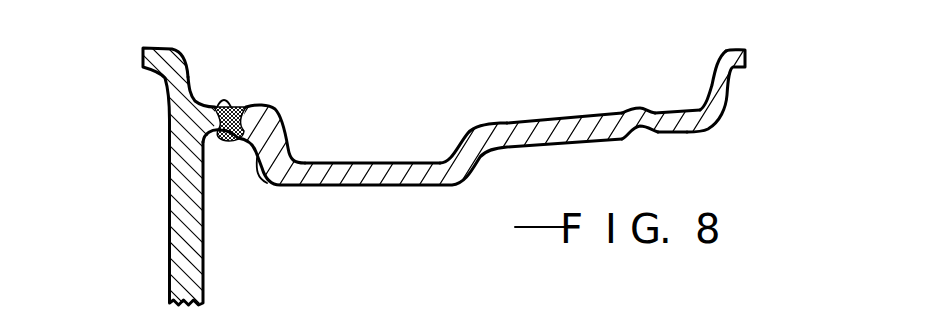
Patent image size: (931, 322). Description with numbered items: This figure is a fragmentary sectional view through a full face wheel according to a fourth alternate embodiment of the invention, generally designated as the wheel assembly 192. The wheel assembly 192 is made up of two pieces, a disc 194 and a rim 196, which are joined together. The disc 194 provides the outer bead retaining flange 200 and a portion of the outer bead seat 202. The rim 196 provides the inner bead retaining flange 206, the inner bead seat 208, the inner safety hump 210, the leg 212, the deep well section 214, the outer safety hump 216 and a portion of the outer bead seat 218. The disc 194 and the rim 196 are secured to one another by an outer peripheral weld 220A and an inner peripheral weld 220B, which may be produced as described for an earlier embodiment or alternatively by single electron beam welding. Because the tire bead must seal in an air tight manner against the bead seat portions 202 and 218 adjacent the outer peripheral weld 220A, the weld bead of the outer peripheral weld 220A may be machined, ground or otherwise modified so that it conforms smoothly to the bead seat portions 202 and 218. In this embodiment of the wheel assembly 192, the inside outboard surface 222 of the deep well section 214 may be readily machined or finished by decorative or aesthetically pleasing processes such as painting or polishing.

The fourth alternate embodiment 192 is at (553, 72).
The disc 194 is at (159, 199).
The rim 196 is at (678, 147).
The outer bead retaining flange 200 is at (169, 56).
The outer bead seat 202 is at (201, 104).
The inner bead retaining flange 206 is at (742, 49).
The inner bead seat 208 is at (673, 108).
The inner safety hump 210 is at (631, 108).
The leg 212 is at (521, 120).
The deep well section 214 is at (438, 153).
The outer safety hump 216 is at (272, 108).
The outer bead seat 218 is at (243, 103).
The outer peripheral weld 220A is at (214, 110).
The inner peripheral weld 220B is at (242, 143).
The inside outboard surface 222 is at (256, 150).